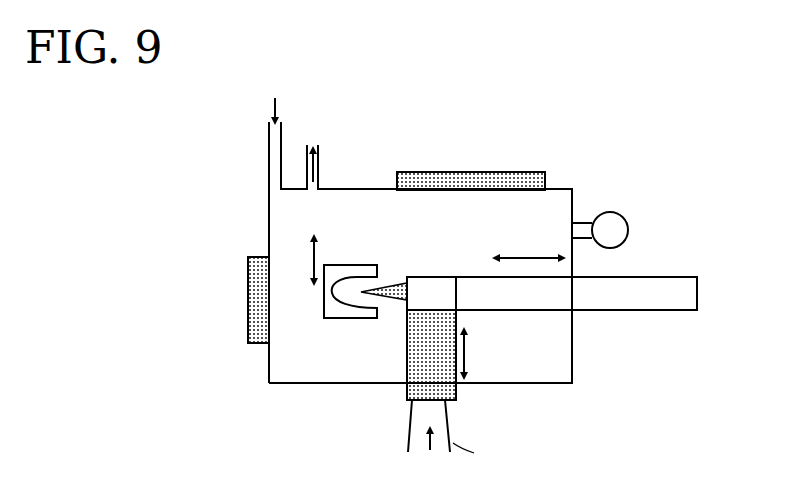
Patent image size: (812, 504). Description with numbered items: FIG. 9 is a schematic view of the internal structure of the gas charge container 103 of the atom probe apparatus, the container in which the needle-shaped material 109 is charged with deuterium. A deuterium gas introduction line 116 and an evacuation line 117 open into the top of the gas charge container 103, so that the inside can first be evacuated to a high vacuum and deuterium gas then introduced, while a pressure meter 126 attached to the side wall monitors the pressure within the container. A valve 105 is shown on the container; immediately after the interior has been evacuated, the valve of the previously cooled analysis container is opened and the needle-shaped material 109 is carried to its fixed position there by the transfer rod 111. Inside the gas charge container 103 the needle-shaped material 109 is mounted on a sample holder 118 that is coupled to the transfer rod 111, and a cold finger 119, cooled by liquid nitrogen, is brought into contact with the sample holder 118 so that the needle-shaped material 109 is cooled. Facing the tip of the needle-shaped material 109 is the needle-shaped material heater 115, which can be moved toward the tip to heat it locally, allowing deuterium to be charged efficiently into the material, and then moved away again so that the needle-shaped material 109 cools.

The gas charge container 103 is at (573, 203).
The valve 105 is at (515, 171).
The needle-shaped material 109 is at (398, 300).
The transfer rod 111 is at (697, 293).
The needle-shaped material heater 115 is at (338, 320).
The deuterium gas introduction line 116 is at (268, 168).
The evacuation line 117 is at (320, 177).
The sample holder 118 is at (423, 285).
The cold finger 119 is at (456, 398).
The pressure meter 126 is at (630, 228).